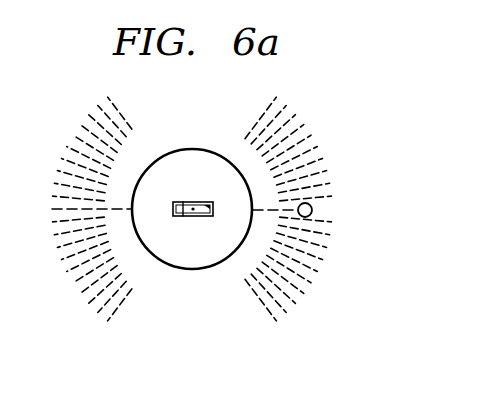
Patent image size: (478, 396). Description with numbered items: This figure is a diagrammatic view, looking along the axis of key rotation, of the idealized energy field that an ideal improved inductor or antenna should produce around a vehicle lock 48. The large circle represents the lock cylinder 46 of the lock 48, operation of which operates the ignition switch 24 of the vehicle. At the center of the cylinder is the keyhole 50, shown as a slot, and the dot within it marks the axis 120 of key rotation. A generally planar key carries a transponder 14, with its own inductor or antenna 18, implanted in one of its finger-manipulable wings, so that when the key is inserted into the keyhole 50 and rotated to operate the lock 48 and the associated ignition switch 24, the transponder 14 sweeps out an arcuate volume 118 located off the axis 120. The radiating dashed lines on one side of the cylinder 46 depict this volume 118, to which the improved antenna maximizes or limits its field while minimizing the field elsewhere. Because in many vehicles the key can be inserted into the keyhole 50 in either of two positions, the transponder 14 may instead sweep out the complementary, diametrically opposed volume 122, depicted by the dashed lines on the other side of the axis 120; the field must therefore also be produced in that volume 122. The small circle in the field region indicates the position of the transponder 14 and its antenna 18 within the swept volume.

The transponder 14 is at (351, 196).
The inductor or antenna 18 is at (313, 209).
The ignition switch 24 is at (192, 200).
The lock 48 is at (192, 200).
The lock cylinder 46 is at (187, 270).
The keyhole 50 is at (205, 201).
The arcuate volume 118 is at (122, 120).
The axis of key rotation 120 is at (193, 211).
The complementary diametrically opposed volume 122 is at (268, 305).